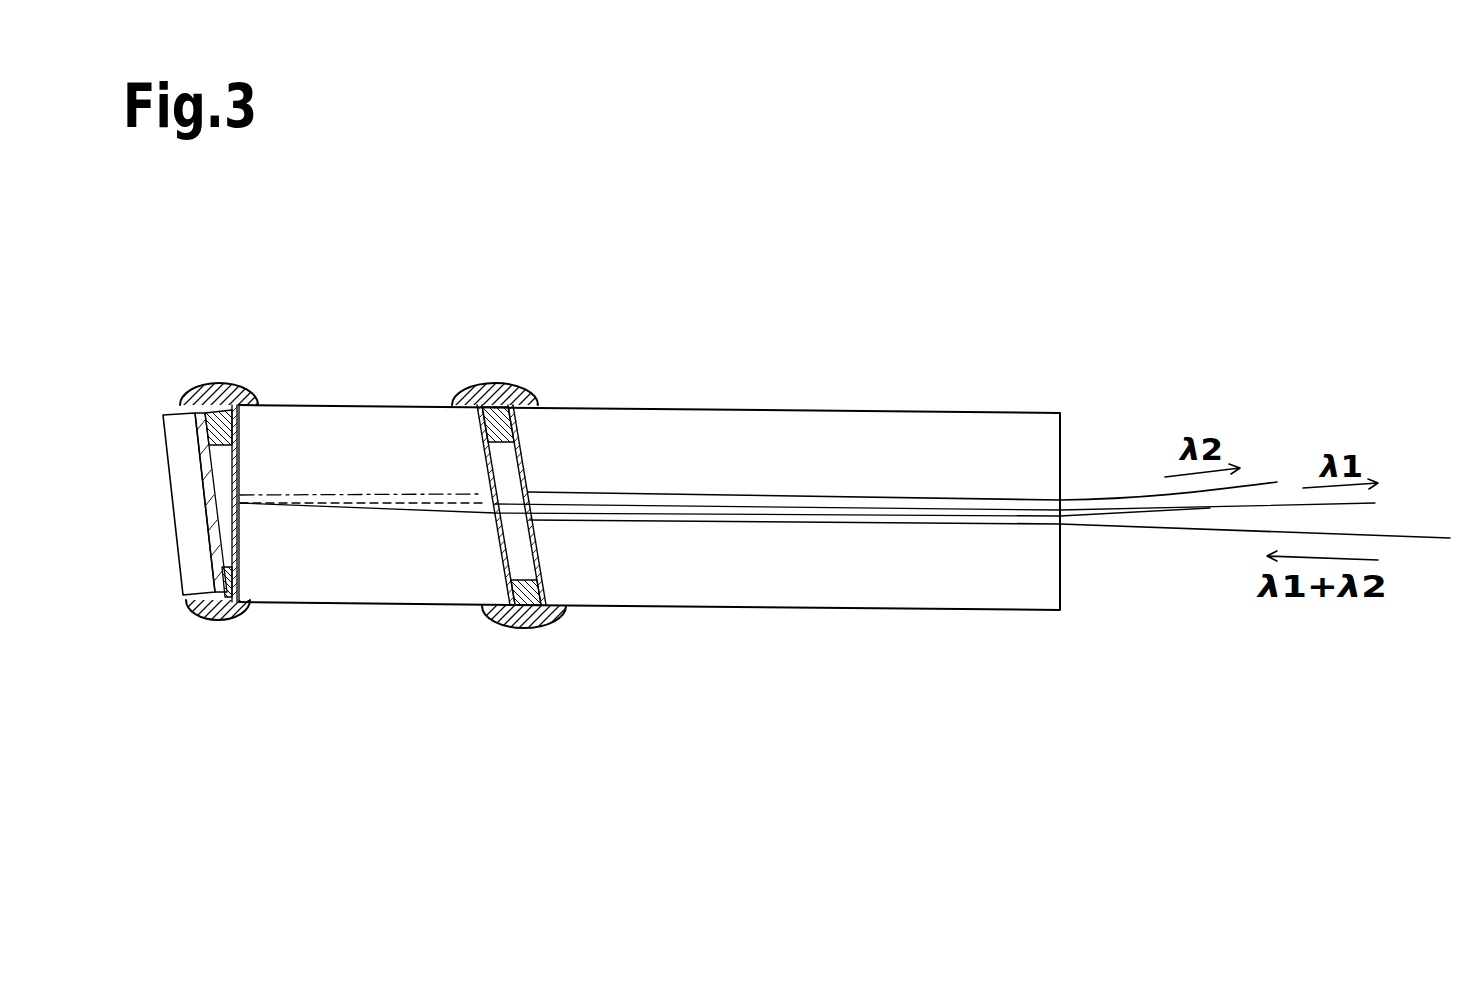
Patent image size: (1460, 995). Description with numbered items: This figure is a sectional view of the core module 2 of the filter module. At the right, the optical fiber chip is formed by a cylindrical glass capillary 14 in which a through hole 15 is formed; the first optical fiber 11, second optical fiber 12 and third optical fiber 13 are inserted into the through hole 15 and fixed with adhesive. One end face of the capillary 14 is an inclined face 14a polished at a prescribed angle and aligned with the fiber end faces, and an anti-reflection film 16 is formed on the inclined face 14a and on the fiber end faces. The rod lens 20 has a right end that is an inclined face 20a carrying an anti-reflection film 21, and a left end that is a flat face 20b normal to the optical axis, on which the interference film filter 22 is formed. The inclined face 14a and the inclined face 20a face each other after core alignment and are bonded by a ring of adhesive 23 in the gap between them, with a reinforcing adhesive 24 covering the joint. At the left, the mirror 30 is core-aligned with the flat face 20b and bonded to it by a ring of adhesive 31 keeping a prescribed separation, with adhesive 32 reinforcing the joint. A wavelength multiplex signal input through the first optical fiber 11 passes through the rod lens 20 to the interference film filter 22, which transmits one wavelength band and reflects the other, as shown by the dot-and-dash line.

The core module 2 is at (649, 435).
The first optical fiber 11 is at (1210, 530).
The second optical fiber 12 is at (1118, 500).
The third optical fiber 13 is at (1358, 504).
The capillary 14 is at (849, 408).
The inclined face 14a is at (525, 455).
The through hole 15 is at (925, 495).
The anti-reflection film 16 is at (540, 565).
The rod lens 20 is at (357, 405).
The inclined face 20a is at (483, 450).
The flat face 20b is at (241, 448).
The anti-reflection film 21 is at (505, 587).
The interference film filter 22 is at (252, 578).
The adhesive 23 is at (530, 628).
The adhesive 24 is at (502, 628).
The mirror 30 is at (178, 503).
The adhesive 31 is at (205, 430).
The adhesive 32 is at (207, 384).